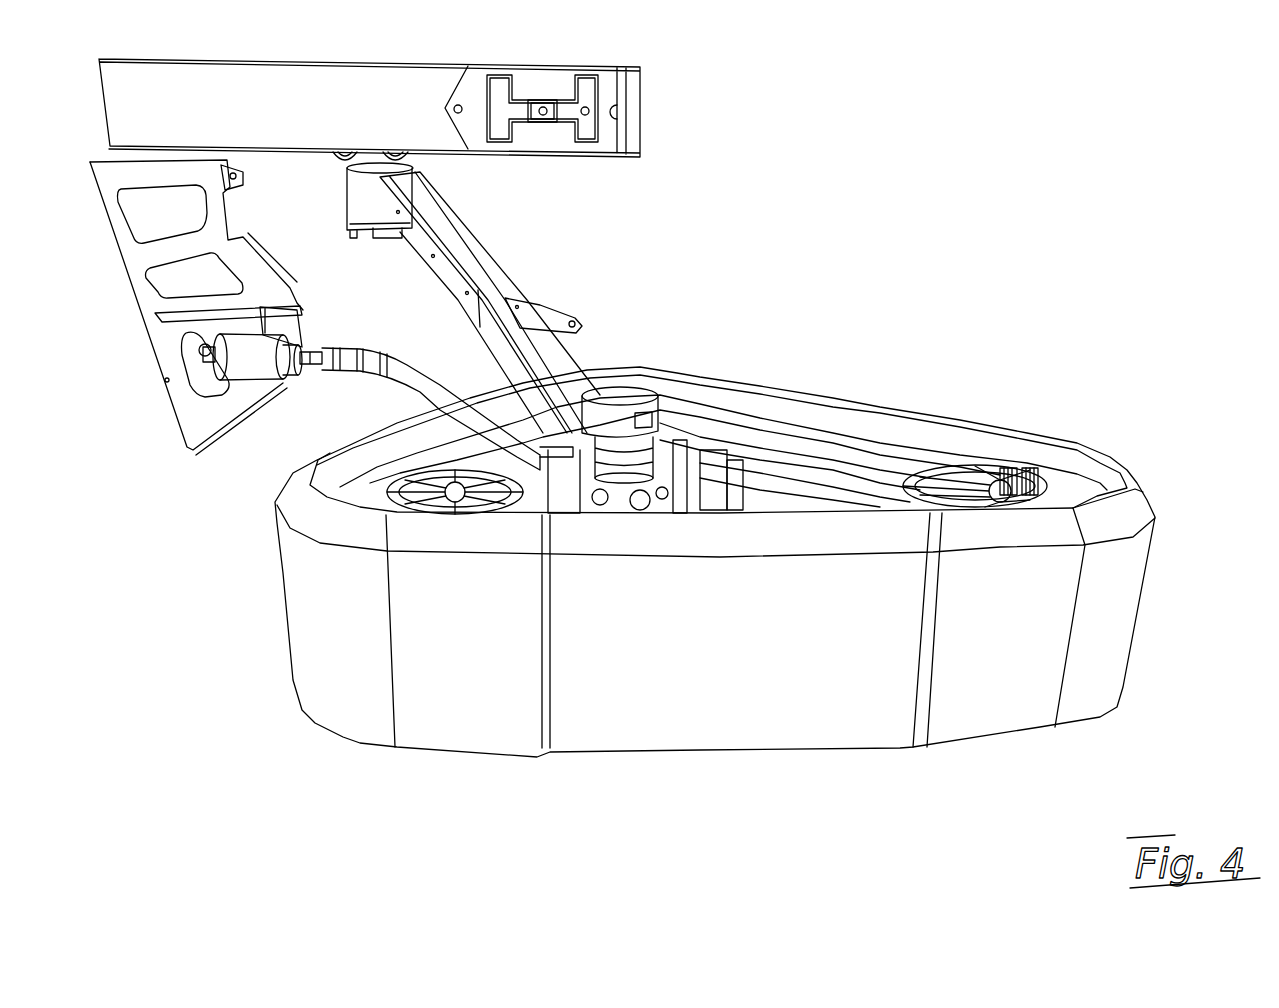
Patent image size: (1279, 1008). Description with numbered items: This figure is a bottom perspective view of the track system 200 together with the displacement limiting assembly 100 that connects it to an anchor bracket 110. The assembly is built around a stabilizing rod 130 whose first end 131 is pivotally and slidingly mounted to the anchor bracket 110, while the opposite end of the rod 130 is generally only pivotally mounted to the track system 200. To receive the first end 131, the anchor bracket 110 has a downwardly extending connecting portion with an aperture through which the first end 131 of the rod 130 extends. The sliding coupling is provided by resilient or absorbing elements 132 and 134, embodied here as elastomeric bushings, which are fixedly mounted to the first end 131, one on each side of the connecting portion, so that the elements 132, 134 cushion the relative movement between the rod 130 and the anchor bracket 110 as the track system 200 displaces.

The dispensing system 100 is at (173, 492).
The anchor bracket 110 is at (165, 357).
The stabilizing rod 130 is at (432, 380).
The first end 131 is at (322, 327).
The absorbing element 132 is at (268, 363).
The absorbing element 134 is at (182, 382).
The track system 200 is at (1148, 402).